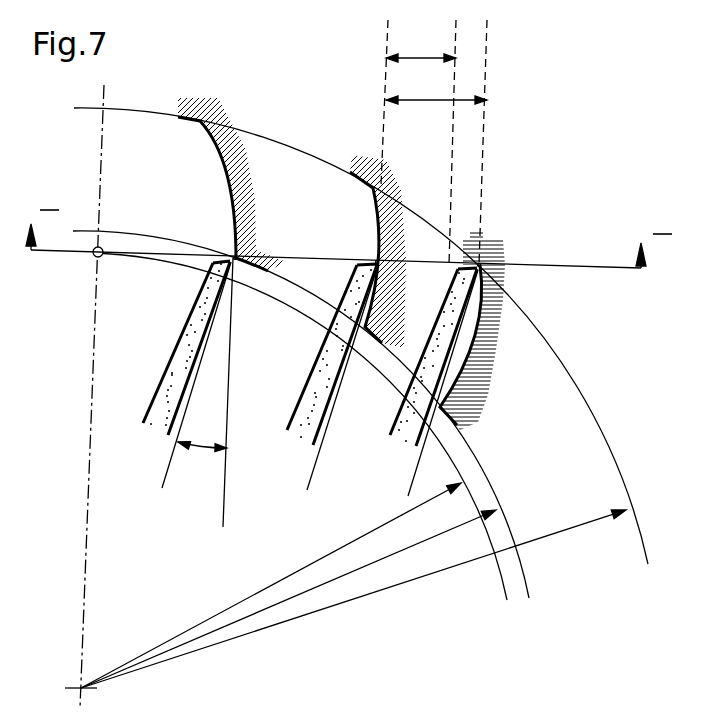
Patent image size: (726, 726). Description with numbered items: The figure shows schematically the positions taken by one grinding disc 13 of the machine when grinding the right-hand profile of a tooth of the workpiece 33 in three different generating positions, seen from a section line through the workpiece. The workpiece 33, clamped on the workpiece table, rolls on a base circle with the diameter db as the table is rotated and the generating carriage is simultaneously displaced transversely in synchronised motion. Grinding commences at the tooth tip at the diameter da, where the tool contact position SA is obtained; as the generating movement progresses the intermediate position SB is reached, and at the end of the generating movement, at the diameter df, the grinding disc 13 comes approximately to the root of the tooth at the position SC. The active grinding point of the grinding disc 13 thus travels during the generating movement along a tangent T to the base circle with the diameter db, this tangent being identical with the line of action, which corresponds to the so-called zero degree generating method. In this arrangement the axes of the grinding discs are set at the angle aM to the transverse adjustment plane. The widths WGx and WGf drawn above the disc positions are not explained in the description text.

The grinding disc 13 is at (166, 372).
The workpiece 33 is at (227, 116).
The tangent T is at (565, 265).
The tool contact position SA is at (211, 233).
The intermediate position SB is at (352, 235).
The position SC is at (444, 245).
The grinding wheel width at x WGx is at (421, 45).
The grinding wheel width at root WGf is at (436, 86).
The base circle diameter db is at (294, 471).
The tooth tip diameter da is at (301, 459).
The root diameter df is at (361, 398).
The angle alpha M aM is at (205, 392).